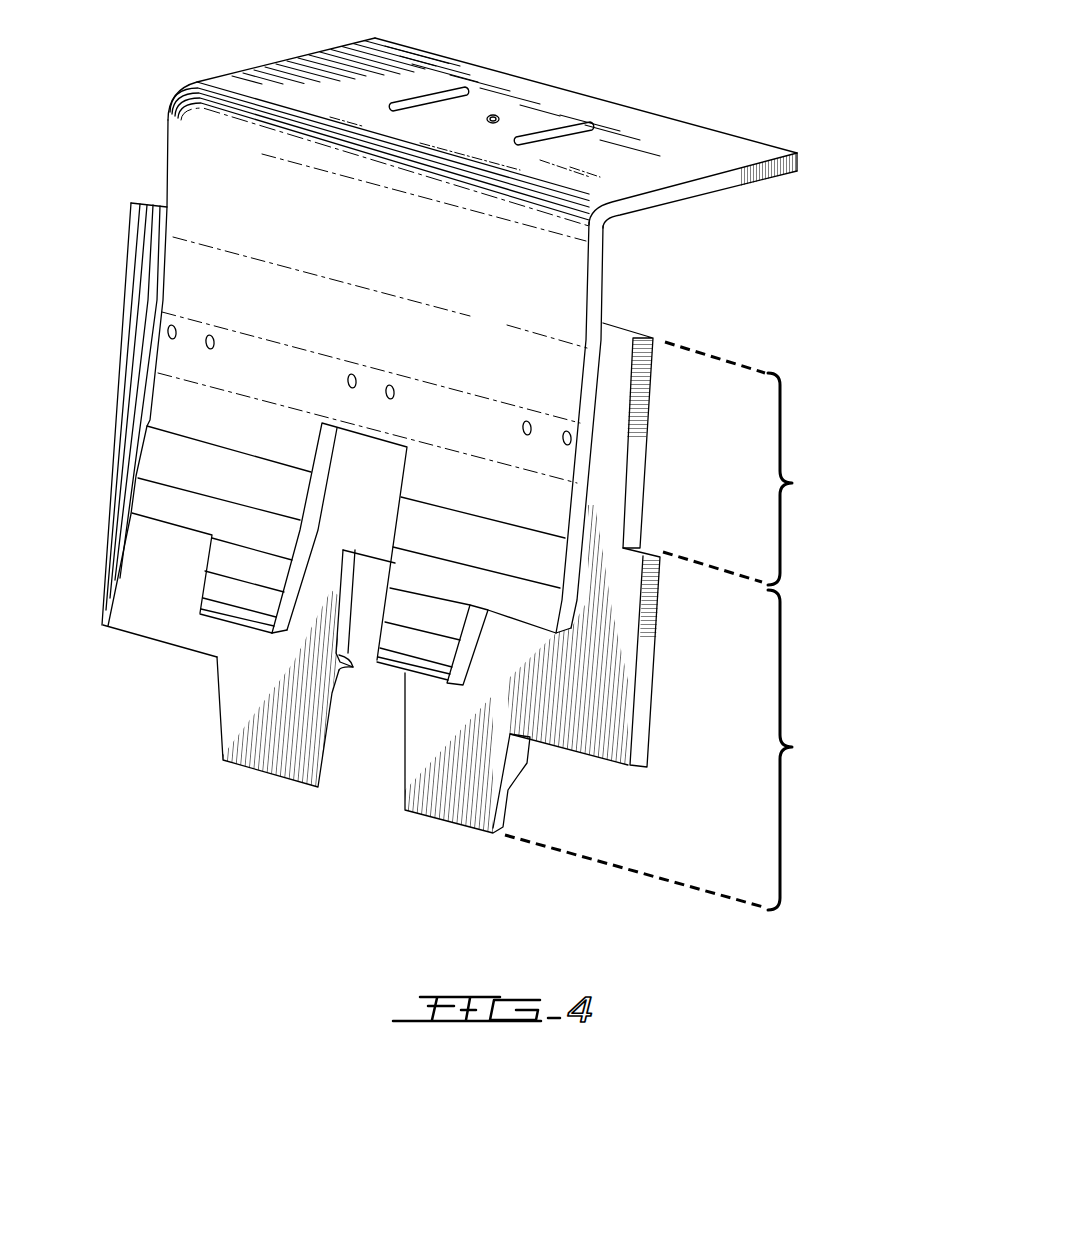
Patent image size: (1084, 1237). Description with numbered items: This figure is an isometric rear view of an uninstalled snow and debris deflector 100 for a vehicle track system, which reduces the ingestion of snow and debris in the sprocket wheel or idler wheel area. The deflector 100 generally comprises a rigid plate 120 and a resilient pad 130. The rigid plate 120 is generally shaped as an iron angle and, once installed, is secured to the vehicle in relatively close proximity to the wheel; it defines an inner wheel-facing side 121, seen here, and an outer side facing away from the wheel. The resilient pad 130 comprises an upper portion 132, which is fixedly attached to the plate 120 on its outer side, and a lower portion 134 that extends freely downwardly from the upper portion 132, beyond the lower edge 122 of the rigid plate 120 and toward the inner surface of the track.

The snow and debris deflector 100 is at (822, 342).
The rigid plate 120 is at (683, 150).
The inner wheel-facing side 121 is at (200, 166).
The lower edge 122 is at (285, 602).
The resilient pad 130 is at (647, 461).
The upper portion 132 is at (755, 463).
The lower portion 134 is at (676, 750).